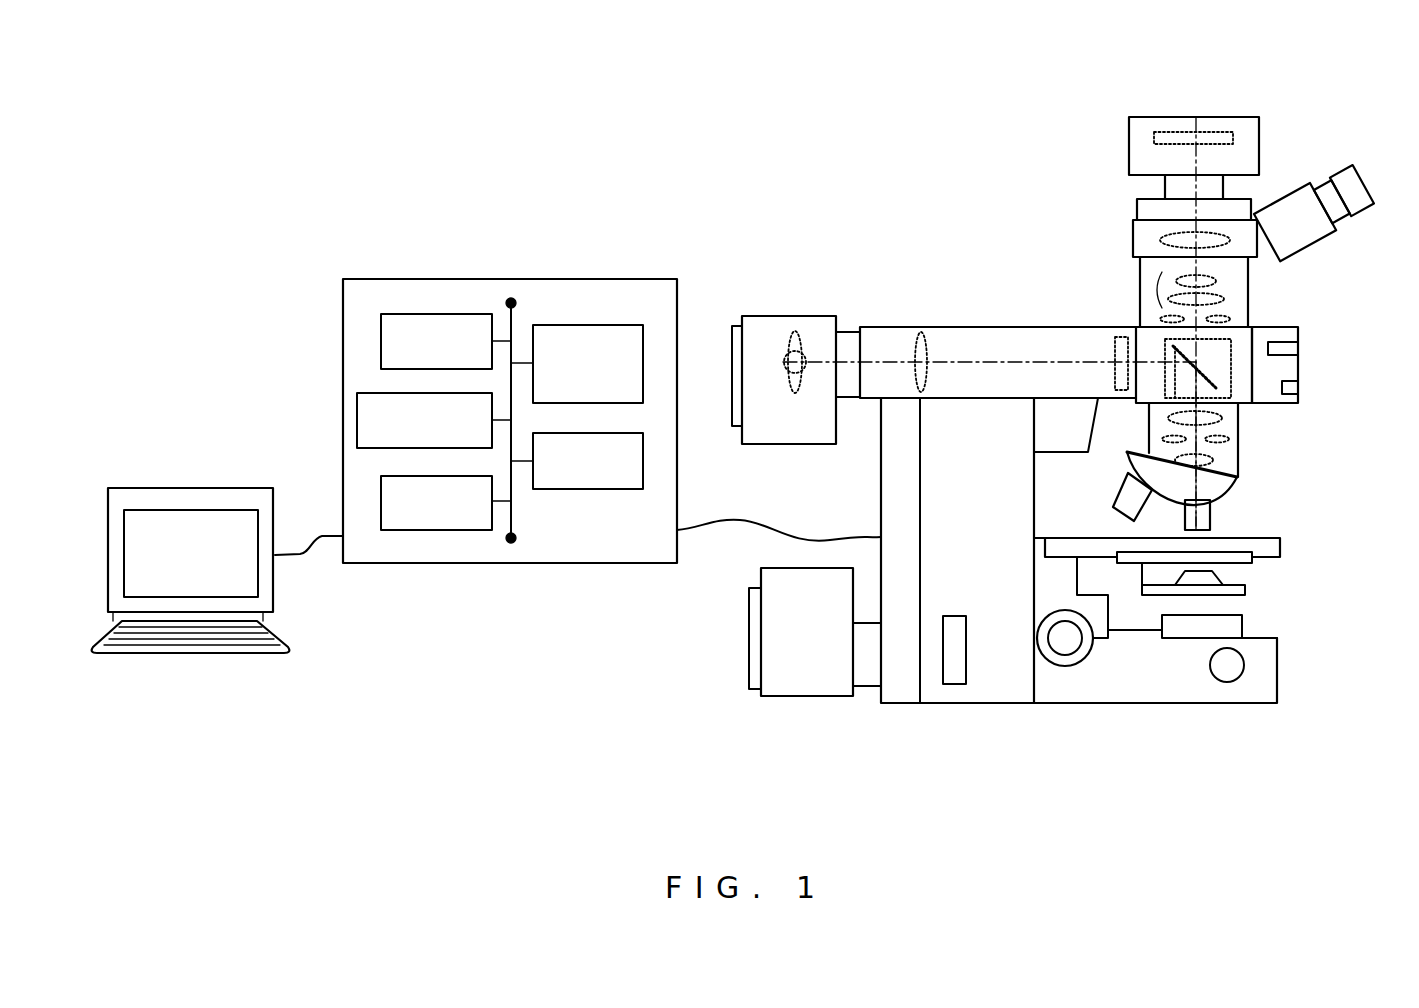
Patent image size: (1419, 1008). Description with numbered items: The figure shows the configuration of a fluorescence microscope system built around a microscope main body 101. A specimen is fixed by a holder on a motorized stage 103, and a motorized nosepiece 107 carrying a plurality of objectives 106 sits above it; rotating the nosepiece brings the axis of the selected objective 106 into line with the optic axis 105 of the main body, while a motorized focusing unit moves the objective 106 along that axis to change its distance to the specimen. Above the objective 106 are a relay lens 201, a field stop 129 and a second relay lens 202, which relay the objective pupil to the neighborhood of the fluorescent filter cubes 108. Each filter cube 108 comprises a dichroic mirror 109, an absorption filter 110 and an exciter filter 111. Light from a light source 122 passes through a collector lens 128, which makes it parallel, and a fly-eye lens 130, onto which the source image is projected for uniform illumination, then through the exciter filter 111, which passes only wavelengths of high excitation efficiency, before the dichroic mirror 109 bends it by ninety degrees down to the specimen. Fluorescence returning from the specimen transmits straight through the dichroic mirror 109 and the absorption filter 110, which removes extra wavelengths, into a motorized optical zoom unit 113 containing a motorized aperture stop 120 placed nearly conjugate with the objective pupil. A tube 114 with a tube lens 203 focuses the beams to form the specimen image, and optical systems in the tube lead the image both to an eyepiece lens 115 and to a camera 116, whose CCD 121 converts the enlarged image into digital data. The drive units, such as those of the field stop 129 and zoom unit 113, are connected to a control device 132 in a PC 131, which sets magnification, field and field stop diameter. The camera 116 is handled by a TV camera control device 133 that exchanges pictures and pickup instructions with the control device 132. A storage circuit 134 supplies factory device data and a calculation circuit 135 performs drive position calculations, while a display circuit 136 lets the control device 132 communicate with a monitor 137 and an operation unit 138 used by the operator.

The microscope main body 101 is at (900, 690).
The motorized stage 103 is at (1257, 548).
The optic axis 105 is at (1190, 210).
The objective 106 is at (1215, 515).
The motorized nosepiece 107 is at (1240, 480).
The fluorescent filter cube 108 is at (1300, 388).
The dichroic mirror 109 is at (1300, 348).
The absorption filter 110 is at (1222, 340).
The exciter filter 111 is at (1170, 380).
The motorized optical zoom unit 113 is at (1157, 290).
The tube 114 is at (1133, 238).
The eyepiece lens 115 is at (1367, 183).
The camera 116 is at (1128, 150).
The motorized aperture stop 120 is at (1225, 315).
The CCD 121 is at (1205, 130).
The light source 122 is at (800, 330).
The collector lens 128 is at (923, 335).
The field stop 129 is at (1230, 440).
The fly-eye lens 130 is at (1116, 350).
The PC 131 is at (472, 449).
The control device 132 is at (580, 490).
The TV camera control device 133 is at (590, 325).
The storage circuit 134 is at (420, 313).
The calculation circuit 135 is at (357, 408).
The display circuit 136 is at (425, 531).
The monitor 137 is at (200, 488).
The operation unit 138 is at (227, 655).
The relay lens 201 is at (1215, 460).
The relay lens 202 is at (1222, 418).
The tube lens 203 is at (1222, 233).